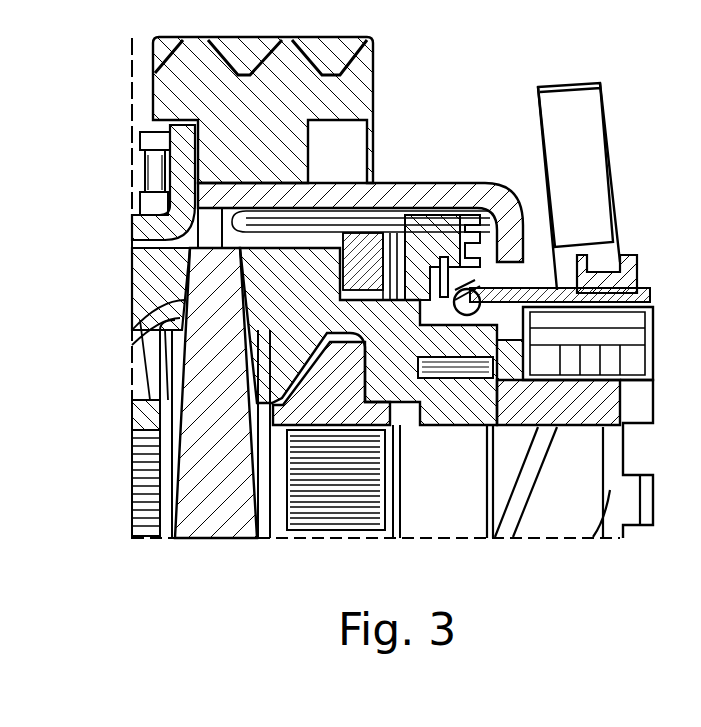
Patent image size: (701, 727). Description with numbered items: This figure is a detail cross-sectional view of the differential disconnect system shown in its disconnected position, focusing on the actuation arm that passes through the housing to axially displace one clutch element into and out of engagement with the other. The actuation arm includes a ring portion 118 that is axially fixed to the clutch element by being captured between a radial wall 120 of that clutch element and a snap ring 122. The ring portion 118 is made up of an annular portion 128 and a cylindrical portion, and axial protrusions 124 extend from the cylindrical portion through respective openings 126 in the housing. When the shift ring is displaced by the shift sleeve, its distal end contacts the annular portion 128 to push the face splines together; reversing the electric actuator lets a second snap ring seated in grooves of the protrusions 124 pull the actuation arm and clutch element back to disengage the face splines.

The ring portion 118 is at (441, 316).
The radial wall 120 is at (430, 263).
The snap ring 122 is at (446, 256).
The axial protrusions 124 is at (563, 330).
The openings 126 is at (525, 284).
The annular portion 128 is at (418, 262).